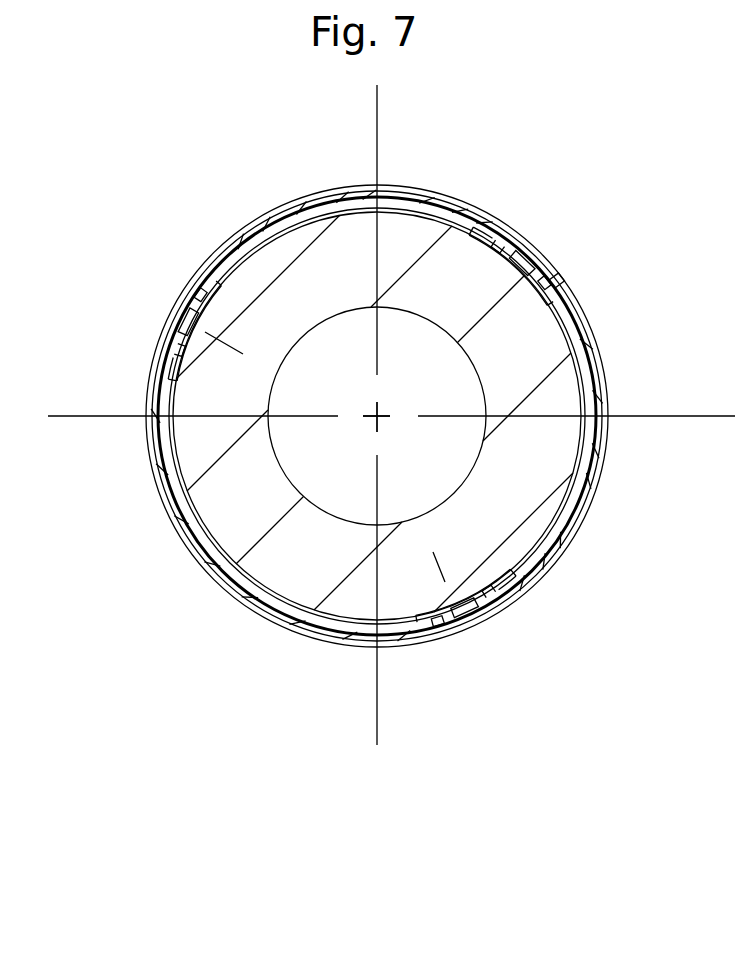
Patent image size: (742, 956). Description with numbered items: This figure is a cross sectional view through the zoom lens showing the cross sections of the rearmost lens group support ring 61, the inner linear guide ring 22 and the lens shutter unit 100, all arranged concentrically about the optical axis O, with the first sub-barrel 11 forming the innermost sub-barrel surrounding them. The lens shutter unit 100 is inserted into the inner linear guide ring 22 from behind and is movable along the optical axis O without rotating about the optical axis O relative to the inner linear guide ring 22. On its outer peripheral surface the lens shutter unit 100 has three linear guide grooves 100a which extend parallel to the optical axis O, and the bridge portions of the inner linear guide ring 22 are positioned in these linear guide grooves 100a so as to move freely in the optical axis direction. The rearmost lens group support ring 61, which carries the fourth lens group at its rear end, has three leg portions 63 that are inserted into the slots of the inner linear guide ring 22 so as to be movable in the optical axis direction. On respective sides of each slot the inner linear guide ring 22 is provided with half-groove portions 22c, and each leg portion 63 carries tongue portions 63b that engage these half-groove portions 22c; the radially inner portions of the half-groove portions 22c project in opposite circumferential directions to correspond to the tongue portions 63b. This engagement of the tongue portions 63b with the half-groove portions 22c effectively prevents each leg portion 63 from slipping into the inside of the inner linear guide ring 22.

The first sub-barrel 11 is at (477, 214).
The inner linear guide ring 22 is at (586, 350).
The half-groove portions 22c is at (186, 324).
The rearmost lens group support ring 61 is at (558, 282).
The leg portions 63 is at (172, 318).
The tongue portions 63b is at (198, 288).
The lens shutter unit 100 is at (545, 437).
The linear guide grooves 100a is at (175, 348).
The optical axis O is at (378, 420).